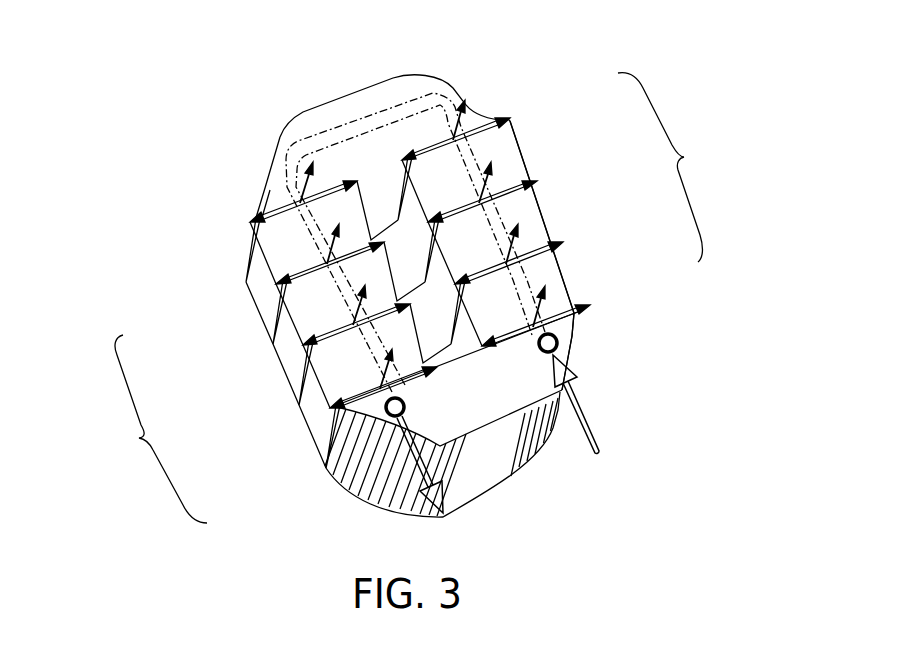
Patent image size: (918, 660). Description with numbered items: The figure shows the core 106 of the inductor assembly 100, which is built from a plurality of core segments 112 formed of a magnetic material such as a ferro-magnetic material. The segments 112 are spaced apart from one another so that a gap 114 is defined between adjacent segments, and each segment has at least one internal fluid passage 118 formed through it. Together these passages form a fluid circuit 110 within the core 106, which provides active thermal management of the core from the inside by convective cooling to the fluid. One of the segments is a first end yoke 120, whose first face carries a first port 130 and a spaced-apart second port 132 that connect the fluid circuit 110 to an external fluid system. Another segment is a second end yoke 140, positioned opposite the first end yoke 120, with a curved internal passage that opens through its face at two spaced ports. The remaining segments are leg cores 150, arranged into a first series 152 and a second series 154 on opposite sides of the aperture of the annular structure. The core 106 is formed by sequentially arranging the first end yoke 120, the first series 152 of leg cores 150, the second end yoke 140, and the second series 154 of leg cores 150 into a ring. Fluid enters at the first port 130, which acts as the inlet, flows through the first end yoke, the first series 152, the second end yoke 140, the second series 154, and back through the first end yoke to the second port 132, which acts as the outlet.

The inductor assembly 100 is at (196, 236).
The core 106 is at (403, 91).
The core segments 112 is at (663, 343).
The fluid circuit 110 is at (292, 394).
The gap 114 is at (514, 114).
The internal fluid passage 118 is at (304, 140).
The first end yoke 120 is at (564, 420).
The first port 130 is at (383, 500).
The second port 132 is at (563, 355).
The second end yoke 140 is at (355, 91).
The leg cores 150 is at (290, 353).
The first series of leg cores 152 is at (150, 429).
The second series of leg cores 154 is at (676, 167).